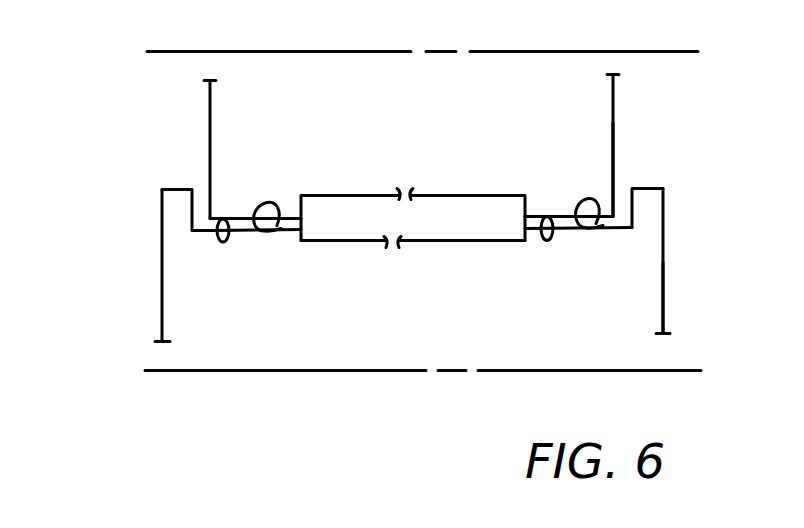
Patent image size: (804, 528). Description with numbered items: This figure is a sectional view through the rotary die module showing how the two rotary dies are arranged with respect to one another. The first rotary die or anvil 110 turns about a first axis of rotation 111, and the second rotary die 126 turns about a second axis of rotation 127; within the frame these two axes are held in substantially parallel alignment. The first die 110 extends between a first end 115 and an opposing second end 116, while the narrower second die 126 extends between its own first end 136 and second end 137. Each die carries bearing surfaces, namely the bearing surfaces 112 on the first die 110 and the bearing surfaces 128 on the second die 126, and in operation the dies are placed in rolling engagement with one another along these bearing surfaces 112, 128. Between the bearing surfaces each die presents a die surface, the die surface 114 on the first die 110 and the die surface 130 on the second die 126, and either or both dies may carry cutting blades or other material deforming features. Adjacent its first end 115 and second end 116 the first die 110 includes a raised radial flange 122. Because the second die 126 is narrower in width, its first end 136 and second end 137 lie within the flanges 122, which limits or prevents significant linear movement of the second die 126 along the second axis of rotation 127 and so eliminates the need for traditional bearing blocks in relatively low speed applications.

The first rotary die 110 is at (662, 301).
The first axis of rotation 111 is at (283, 368).
The bearing surfaces 112 is at (274, 223).
The die surface 114 is at (345, 238).
The first end 115 is at (660, 251).
The second end 116 is at (157, 273).
The raised radial flange 122 is at (164, 187).
The second rotary die 126 is at (610, 104).
The second axis of rotation 127 is at (194, 49).
The bearing surfaces 128 is at (234, 218).
The die surface 130 is at (341, 193).
The first end 136 is at (610, 141).
The second end 137 is at (205, 120).